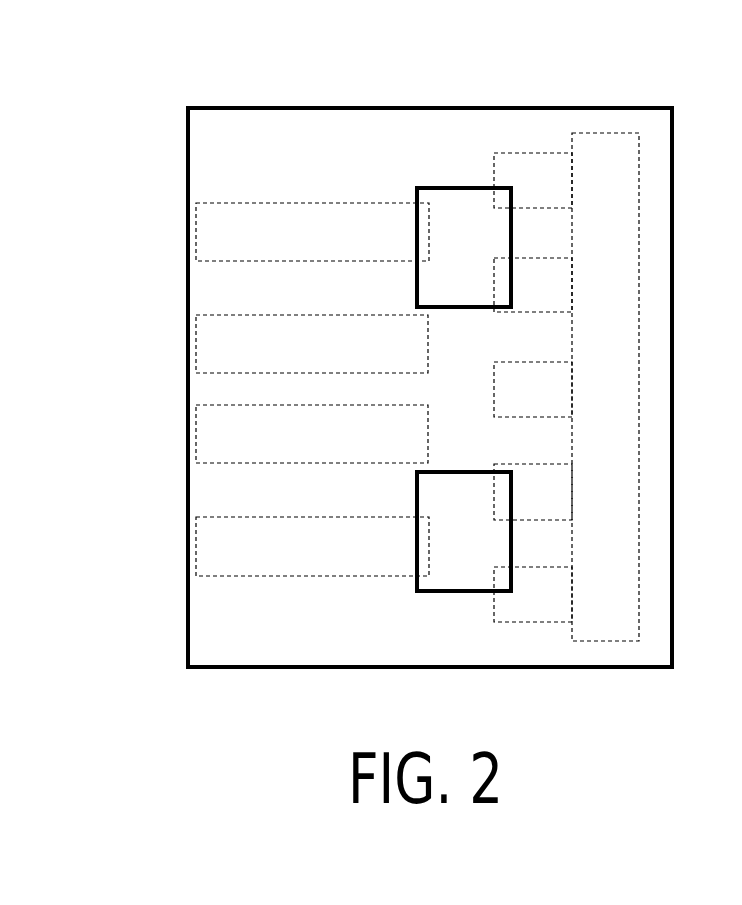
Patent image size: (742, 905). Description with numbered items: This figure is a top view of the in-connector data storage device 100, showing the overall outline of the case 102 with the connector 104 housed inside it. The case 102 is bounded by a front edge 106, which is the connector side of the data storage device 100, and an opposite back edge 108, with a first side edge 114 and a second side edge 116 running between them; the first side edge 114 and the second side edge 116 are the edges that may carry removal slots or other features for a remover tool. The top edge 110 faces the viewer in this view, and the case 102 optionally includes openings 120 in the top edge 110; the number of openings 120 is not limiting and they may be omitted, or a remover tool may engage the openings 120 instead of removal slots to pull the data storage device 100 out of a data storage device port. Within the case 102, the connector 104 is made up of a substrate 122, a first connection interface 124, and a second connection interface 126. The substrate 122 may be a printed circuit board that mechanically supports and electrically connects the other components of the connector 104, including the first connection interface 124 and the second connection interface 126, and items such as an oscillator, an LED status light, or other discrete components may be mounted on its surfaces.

The data storage device 100 is at (82, 156).
The case 102 is at (285, 140).
The connector 104 is at (462, 217).
The front edge 106 is at (188, 657).
The back edge 108 is at (673, 228).
The top edge 110 is at (653, 145).
The first side edge 114 is at (392, 108).
The second side edge 116 is at (622, 667).
The openings 120 is at (419, 189).
The substrate 122 is at (470, 287).
The first connection interface 124 is at (506, 495).
The second connection interface 126 is at (418, 521).